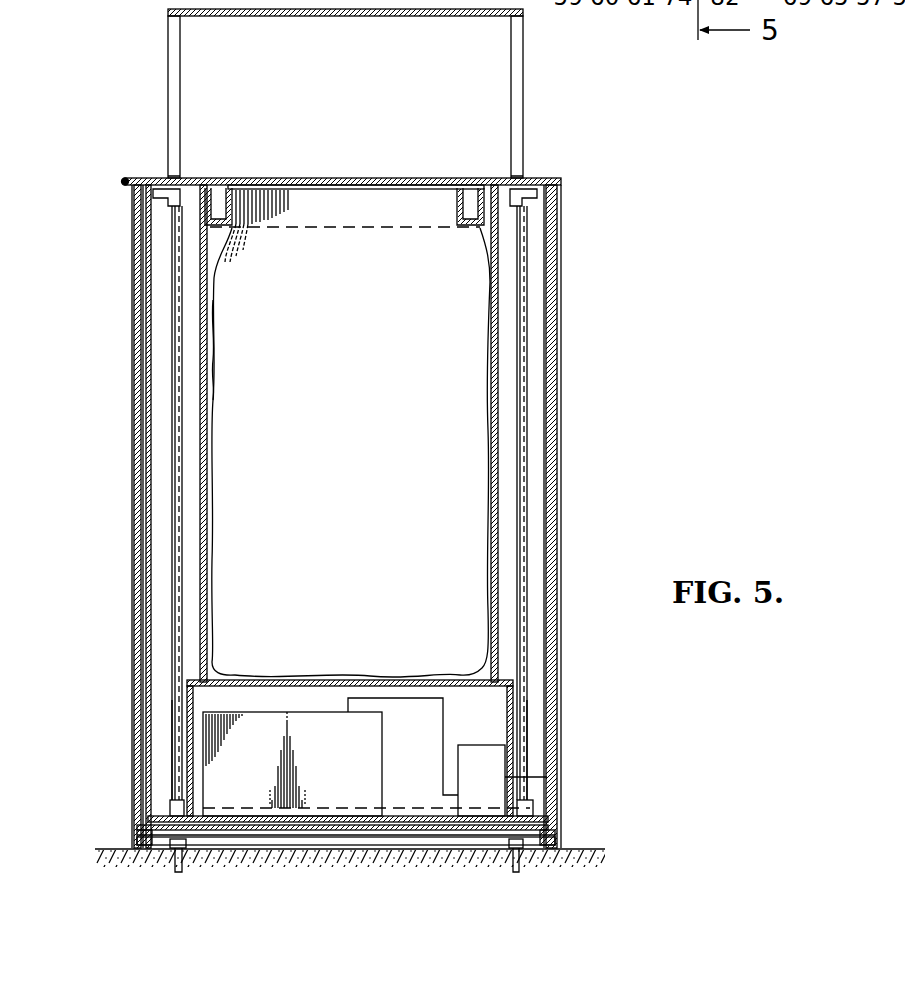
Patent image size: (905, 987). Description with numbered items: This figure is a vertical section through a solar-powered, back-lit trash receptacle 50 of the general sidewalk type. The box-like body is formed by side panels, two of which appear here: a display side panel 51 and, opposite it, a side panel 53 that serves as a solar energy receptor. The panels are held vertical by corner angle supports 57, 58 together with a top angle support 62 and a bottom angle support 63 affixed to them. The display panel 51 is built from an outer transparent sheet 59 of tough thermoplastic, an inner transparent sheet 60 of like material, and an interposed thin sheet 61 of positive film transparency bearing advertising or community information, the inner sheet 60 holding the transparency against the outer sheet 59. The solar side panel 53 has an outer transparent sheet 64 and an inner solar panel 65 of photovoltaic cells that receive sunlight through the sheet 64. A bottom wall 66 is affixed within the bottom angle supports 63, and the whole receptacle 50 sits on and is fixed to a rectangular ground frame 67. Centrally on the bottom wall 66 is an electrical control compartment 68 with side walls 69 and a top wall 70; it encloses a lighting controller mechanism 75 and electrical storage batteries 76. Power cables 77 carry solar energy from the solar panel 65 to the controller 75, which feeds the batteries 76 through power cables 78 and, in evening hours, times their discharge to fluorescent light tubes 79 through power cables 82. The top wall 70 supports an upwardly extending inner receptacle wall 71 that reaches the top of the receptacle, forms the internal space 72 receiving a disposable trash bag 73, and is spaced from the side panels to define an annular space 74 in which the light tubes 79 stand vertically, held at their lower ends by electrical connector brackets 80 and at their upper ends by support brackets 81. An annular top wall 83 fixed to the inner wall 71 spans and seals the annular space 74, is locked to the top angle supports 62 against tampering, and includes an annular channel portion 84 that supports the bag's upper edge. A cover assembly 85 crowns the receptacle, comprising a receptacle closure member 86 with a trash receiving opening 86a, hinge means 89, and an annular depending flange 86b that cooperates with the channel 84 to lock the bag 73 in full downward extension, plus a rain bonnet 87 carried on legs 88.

The trash receptacle 50 is at (348, 495).
The side panel 51 is at (111, 516).
The side panel 53 is at (584, 516).
The corner angle support 57 is at (560, 287).
The corner angle support 58 is at (132, 265).
The outer transparent sheet 59 is at (137, 297).
The inner transparent sheet 60 is at (153, 313).
The sheet of positive film transparency material 61 is at (148, 338).
The top angle support 62 is at (347, 197).
The bottom angle support 63 is at (134, 816).
The outer transparent sheet 64 is at (555, 357).
The solar panel 65 is at (546, 416).
The bottom wall 66 is at (336, 825).
The ground frame 67 is at (564, 840).
The electrical control compartment 68 is at (483, 712).
The side wall 69 is at (186, 700).
The top wall 70 is at (259, 681).
The inner receptacle wall 71 is at (216, 410).
The internal space 72 is at (213, 331).
The disposable trash bag 73 is at (215, 366).
The annular space 74 is at (165, 403).
The lighting controller mechanism 75 is at (465, 773).
The electrical storage batteries 76 is at (299, 774).
The power cable 77 is at (541, 772).
The power cable 78 is at (395, 700).
The fluorescent light tube 79 is at (176, 727).
The electrical connector bracket 80 is at (171, 802).
The support bracket 81 is at (165, 200).
The power cable 82 is at (427, 808).
The annular top wall 83 is at (183, 182).
The annular channel portion 84 is at (226, 262).
The cover assembly 85 is at (396, 93).
The receptacle closure member 86 is at (207, 191).
The trash receiving opening 86a is at (272, 186).
The annular depending flange 86b is at (466, 202).
The rain bonnet 87 is at (268, 17).
The leg 88 is at (181, 100).
The hinge means 89 is at (124, 183).